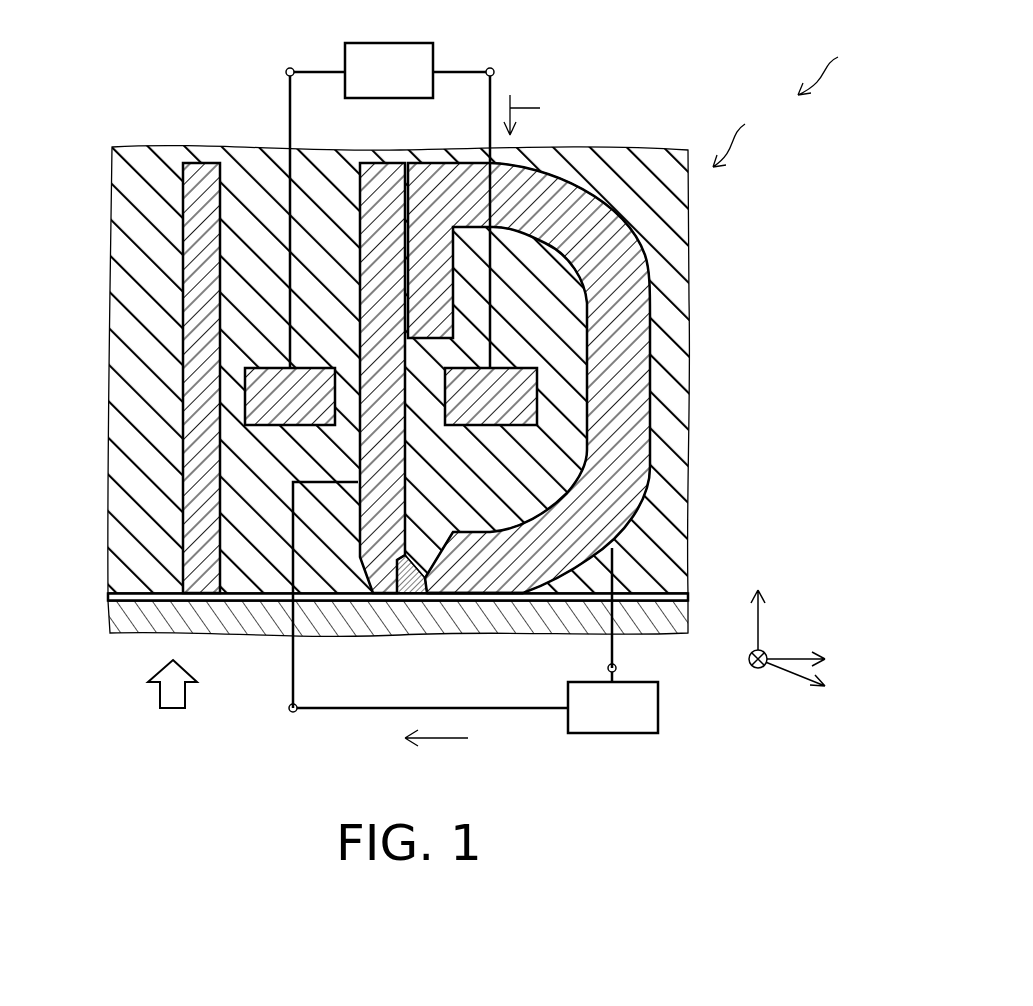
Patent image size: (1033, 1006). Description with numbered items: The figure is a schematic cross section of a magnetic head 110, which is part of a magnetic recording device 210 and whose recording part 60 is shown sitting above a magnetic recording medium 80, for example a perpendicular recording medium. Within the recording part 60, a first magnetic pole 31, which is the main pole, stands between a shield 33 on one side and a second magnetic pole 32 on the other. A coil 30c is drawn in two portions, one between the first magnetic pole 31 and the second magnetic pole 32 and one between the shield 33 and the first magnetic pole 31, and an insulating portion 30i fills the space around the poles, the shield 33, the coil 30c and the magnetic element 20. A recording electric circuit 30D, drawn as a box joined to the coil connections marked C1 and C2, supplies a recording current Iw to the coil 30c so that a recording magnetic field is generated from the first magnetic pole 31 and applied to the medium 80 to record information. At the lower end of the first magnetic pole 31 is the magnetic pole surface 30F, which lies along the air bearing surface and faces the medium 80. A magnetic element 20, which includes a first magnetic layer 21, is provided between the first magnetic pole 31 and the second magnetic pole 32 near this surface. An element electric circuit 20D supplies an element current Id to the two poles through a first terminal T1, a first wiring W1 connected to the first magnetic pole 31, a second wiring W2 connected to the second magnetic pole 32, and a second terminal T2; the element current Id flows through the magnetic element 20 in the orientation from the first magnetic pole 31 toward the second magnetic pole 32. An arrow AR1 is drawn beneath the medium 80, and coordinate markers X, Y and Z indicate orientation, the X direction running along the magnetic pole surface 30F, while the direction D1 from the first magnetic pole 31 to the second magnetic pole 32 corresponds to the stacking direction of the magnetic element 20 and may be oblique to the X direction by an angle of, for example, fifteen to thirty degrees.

The magnetic head 110 is at (690, 120).
The magnetic recording device 210 is at (842, 69).
The recording part 60 is at (743, 131).
The recording electric circuit 30D is at (435, 53).
The coil terminal C1 is at (286, 70).
The coil terminal C2 is at (495, 70).
The recording current Iw is at (538, 115).
The first magnetic pole 31 is at (385, 200).
The second magnetic pole 32 is at (638, 484).
The shield 33 is at (190, 505).
The insulating portion 30i is at (255, 320).
The coil 30c is at (245, 390).
The magnetic pole surface 30F is at (388, 597).
The magnetic element 20 is at (402, 600).
The first magnetic layer 21 is at (420, 583).
The magnetic recording medium 80 is at (125, 622).
The element electric circuit 20D is at (660, 703).
The first terminal T1 is at (289, 708).
The second terminal T2 is at (618, 668).
The first wiring W1 is at (290, 675).
The second wiring W2 is at (608, 657).
The element current Id is at (440, 740).
The direction of medium movement AR1 is at (160, 685).
The Z axis Z is at (758, 611).
The X-axis direction X is at (806, 666).
The Y axis Y is at (747, 666).
The direction D1 is at (809, 682).